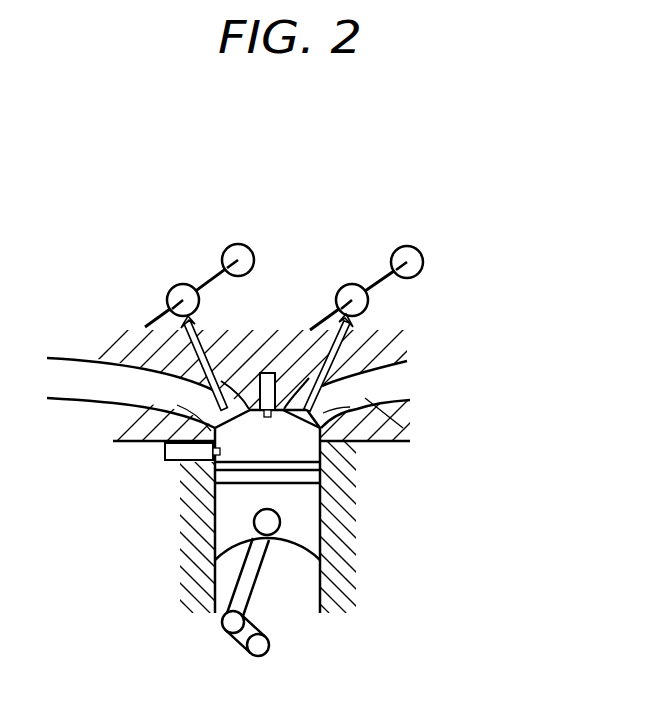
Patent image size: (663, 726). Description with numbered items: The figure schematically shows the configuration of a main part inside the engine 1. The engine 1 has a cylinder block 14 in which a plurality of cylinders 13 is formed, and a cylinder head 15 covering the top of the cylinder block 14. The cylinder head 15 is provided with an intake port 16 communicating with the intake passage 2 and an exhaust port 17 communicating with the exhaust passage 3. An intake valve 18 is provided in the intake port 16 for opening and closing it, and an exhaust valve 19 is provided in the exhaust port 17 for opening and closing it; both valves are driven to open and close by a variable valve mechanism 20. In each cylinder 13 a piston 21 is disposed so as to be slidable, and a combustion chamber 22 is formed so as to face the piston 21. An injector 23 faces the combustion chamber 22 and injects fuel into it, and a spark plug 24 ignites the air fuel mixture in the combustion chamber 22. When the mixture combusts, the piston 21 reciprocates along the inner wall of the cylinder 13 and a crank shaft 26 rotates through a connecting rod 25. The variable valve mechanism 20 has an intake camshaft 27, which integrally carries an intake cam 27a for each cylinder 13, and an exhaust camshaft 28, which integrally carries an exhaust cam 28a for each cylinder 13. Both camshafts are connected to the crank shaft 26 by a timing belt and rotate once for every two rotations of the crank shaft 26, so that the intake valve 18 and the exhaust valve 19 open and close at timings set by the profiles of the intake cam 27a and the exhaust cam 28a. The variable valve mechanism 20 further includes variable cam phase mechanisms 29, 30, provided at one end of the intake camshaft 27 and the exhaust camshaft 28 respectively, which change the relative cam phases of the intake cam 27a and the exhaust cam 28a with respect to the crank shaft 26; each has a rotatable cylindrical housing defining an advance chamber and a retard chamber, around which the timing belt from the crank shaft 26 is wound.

The engine 1 is at (472, 130).
The intake passage 2 is at (127, 378).
The exhaust passage 3 is at (325, 412).
The cylinder 13 is at (307, 512).
The cylinder block 14 is at (187, 540).
The cylinder head 15 is at (130, 425).
The intake port 16 is at (153, 440).
The exhaust port 17 is at (357, 410).
The intake valve 18 is at (213, 400).
The exhaust valve 19 is at (320, 395).
The variable valve mechanism 20 is at (380, 158).
The piston 21 is at (300, 533).
The combustion chamber 22 is at (323, 452).
The injector 23 is at (175, 463).
The spark plug 24 is at (268, 372).
The connecting rod 25 is at (253, 592).
The crank shaft 26 is at (245, 657).
The intake camshaft 27 is at (147, 323).
The intake cam 27a is at (178, 287).
The exhaust camshaft 28 is at (375, 287).
The exhaust cam 28a is at (368, 307).
The variable cam phase mechanism 29 is at (240, 245).
The variable cam phase mechanism 30 is at (407, 246).